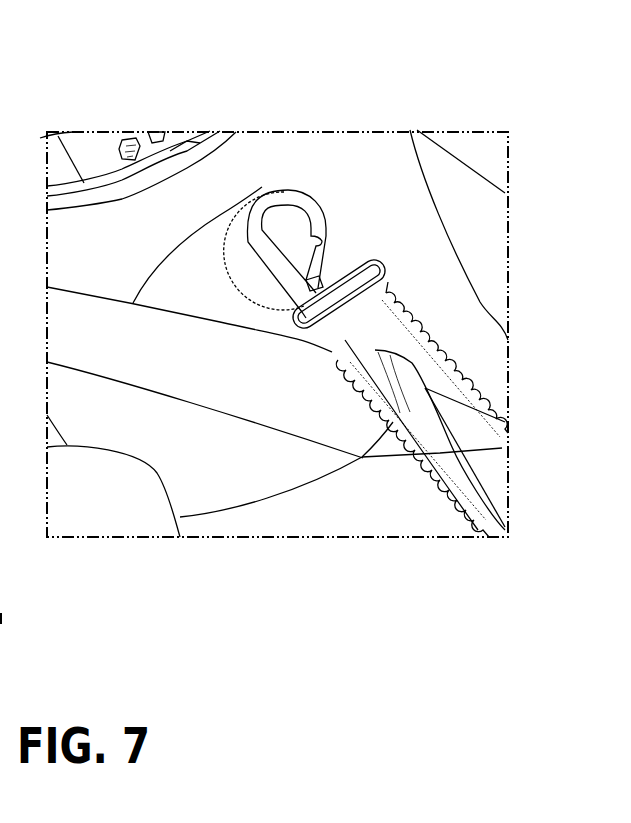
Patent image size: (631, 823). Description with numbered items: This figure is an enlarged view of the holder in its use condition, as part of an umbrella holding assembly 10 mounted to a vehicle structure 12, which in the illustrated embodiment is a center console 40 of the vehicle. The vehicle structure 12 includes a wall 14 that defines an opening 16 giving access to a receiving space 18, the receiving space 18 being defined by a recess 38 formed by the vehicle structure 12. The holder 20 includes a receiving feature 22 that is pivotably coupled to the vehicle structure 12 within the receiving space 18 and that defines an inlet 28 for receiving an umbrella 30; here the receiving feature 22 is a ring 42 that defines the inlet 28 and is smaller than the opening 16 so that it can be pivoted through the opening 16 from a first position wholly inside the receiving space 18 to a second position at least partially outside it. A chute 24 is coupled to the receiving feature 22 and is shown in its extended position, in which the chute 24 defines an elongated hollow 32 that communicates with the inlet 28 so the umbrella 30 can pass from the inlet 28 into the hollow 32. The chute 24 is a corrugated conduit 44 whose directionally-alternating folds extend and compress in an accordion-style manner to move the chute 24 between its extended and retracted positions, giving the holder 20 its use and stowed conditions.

The umbrella holding assembly 10 is at (380, 226).
The vehicle structure 12 is at (99, 236).
The wall 14 is at (130, 226).
The opening 16 is at (237, 292).
The receiving space 18 is at (265, 293).
The holder 20 is at (385, 262).
The receiving feature 22 is at (358, 262).
The chute 24 is at (423, 338).
The inlet 28 is at (348, 266).
The umbrella 30 is at (283, 196).
The hollow 32 is at (467, 379).
The recess 38 is at (236, 238).
The center console 40 is at (133, 300).
The ring 42 is at (320, 340).
The corrugated conduit 44 is at (393, 422).